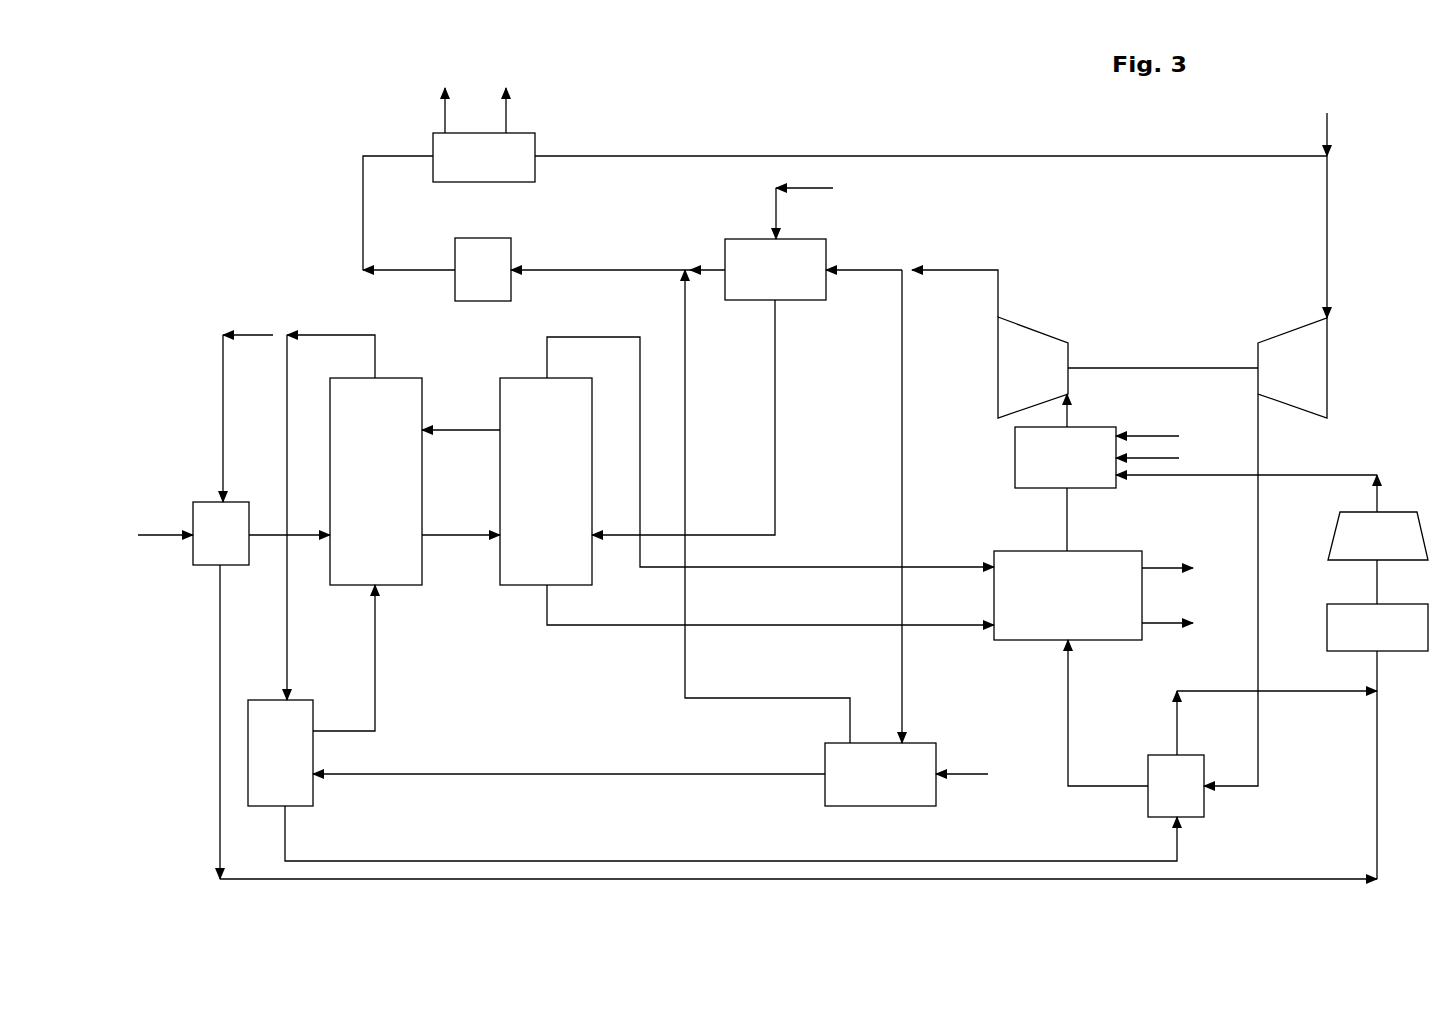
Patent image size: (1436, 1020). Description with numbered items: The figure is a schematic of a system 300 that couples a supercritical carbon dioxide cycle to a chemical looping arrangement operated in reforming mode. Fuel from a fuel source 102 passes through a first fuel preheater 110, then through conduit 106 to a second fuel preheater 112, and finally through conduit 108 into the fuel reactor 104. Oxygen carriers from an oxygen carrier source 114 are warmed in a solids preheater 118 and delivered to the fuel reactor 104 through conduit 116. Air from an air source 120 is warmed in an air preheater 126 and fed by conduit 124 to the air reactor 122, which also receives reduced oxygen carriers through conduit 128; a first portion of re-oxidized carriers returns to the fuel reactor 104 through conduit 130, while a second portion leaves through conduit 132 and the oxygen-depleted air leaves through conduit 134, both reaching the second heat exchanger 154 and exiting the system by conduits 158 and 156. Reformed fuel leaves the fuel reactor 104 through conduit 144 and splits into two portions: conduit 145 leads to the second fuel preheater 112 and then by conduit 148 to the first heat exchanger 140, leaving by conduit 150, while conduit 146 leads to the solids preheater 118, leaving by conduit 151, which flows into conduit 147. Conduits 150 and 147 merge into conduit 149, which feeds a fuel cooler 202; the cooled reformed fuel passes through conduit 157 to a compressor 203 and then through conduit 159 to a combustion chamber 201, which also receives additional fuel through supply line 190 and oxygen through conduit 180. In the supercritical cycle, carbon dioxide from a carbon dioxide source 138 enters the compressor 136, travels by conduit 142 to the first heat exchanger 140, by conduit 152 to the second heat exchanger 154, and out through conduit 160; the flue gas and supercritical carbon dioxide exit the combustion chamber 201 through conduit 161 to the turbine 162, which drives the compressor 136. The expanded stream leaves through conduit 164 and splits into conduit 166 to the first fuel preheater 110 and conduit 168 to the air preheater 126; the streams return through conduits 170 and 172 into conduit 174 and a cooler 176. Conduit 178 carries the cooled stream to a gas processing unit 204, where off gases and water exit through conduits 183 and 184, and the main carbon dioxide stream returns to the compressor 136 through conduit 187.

The system 300 is at (275, 145).
The fuel source 102 is at (981, 777).
The fuel reactor 104 is at (376, 481).
The conduit 106 is at (562, 773).
The conduit 108 is at (378, 717).
The first fuel preheater 110 is at (880, 774).
The second fuel preheater 112 is at (280, 753).
The oxygen carrier source 114 is at (162, 535).
The conduit 116 is at (267, 530).
The solids preheater 118 is at (221, 533).
The air source 120 is at (824, 208).
The air reactor 122 is at (546, 481).
The conduit 124 is at (776, 398).
The air preheater 126 is at (775, 269).
The conduit 128 is at (461, 518).
The conduit 130 is at (461, 414).
The conduit 132 is at (610, 628).
The conduit 134 is at (568, 337).
The compressor 136 is at (1292, 368).
The CO2 source 138 is at (1320, 203).
The first heat exchanger 140 is at (1176, 786).
The conduit 142 is at (1260, 521).
The conduit 144 is at (345, 335).
The conduit 145 is at (287, 632).
The conduit 146 is at (273, 335).
The conduit 147 is at (1328, 878).
The conduit 148 is at (568, 860).
The conduit 149 is at (1376, 682).
The conduit 150 is at (1178, 743).
The conduit 151 is at (218, 627).
The conduit 152 is at (1130, 785).
The second heat exchanger 154 is at (1068, 595).
The conduit 156 is at (1187, 569).
The conduit 157 is at (1376, 582).
The conduit 158 is at (1187, 623).
The conduit 159 is at (1338, 474).
The conduit 160 is at (1068, 534).
The conduit 161 is at (1068, 414).
The turbine 162 is at (1033, 367).
The conduit 164 is at (971, 268).
The conduit 166 is at (904, 404).
The conduit 168 is at (888, 267).
The conduit 170 is at (748, 697).
The conduit 172 is at (715, 267).
The conduit 174 is at (583, 268).
The cooler 176 is at (483, 269).
The conduit 178 is at (407, 157).
The conduit 180 is at (1143, 433).
The conduit 183 is at (419, 106).
The conduit 184 is at (531, 106).
The conduit 187 is at (1108, 157).
The supply line 190 is at (1143, 457).
The combustion chamber 201 is at (1065, 457).
The fuel cooler 202 is at (1377, 627).
The compressor 203 is at (1378, 536).
The gas processing unit 204 is at (484, 157).